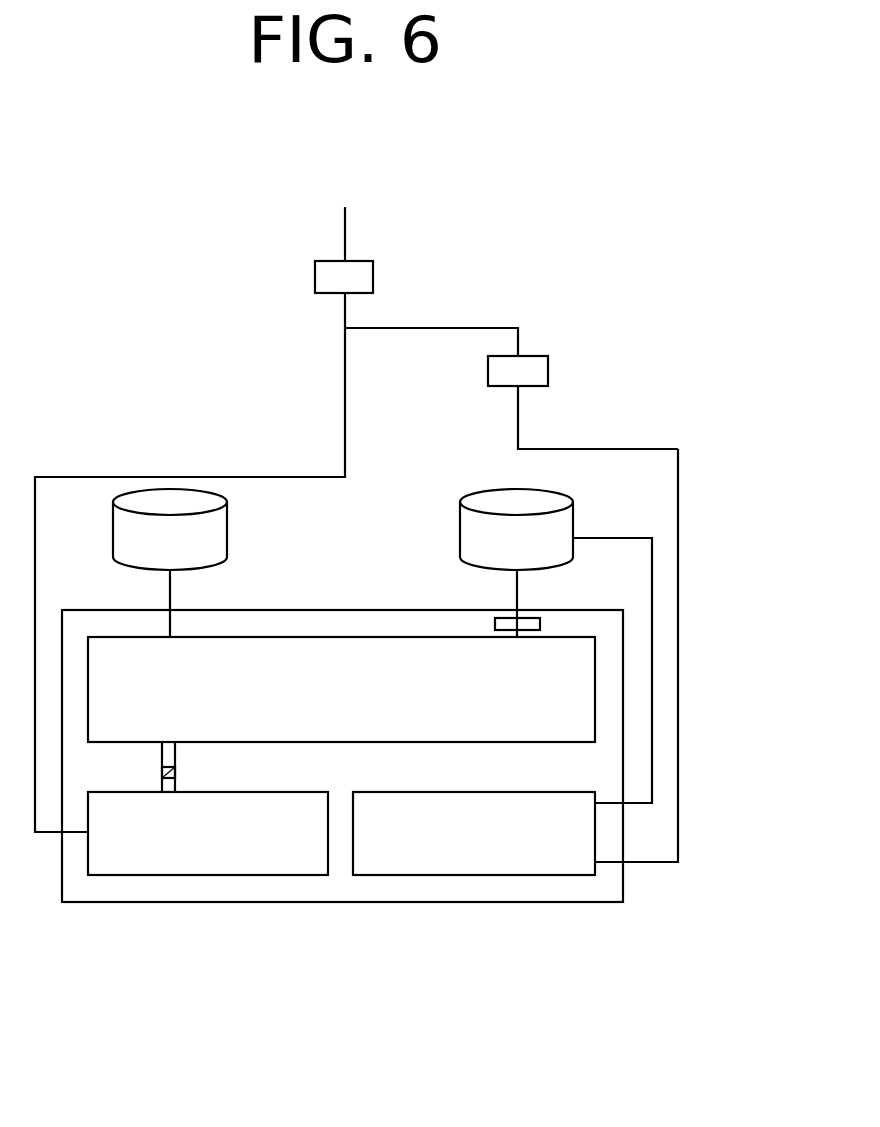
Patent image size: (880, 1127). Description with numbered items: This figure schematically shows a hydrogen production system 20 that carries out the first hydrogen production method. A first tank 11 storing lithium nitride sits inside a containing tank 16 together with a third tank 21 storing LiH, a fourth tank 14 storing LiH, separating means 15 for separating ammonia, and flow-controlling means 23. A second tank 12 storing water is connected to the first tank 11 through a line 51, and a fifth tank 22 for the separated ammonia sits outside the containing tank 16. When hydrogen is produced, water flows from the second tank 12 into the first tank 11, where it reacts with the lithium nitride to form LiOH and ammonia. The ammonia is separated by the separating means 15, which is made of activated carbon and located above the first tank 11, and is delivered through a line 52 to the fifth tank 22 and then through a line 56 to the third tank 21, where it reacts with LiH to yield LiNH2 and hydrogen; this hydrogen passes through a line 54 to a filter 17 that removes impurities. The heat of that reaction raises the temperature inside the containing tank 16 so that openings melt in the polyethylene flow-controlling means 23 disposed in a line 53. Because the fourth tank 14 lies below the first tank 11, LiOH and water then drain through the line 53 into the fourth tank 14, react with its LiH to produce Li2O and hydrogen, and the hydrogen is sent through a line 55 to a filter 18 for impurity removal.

The hydrogen production system 20 is at (395, 138).
The first tank 11 is at (343, 655).
The second tank 12 is at (218, 528).
The fourth tank 14 is at (258, 850).
The separating means 15 is at (505, 625).
The tank 16 is at (143, 903).
The filter 17 is at (548, 368).
The filter 18 is at (373, 275).
The third tank 21 is at (540, 853).
The fifth tank 22 is at (490, 503).
The flow-controlling means 23 is at (175, 770).
The line 51 is at (170, 575).
The line 52 is at (517, 578).
The line 53 is at (162, 750).
The line 54 is at (518, 405).
The line 55 is at (345, 230).
The line 56 is at (678, 602).